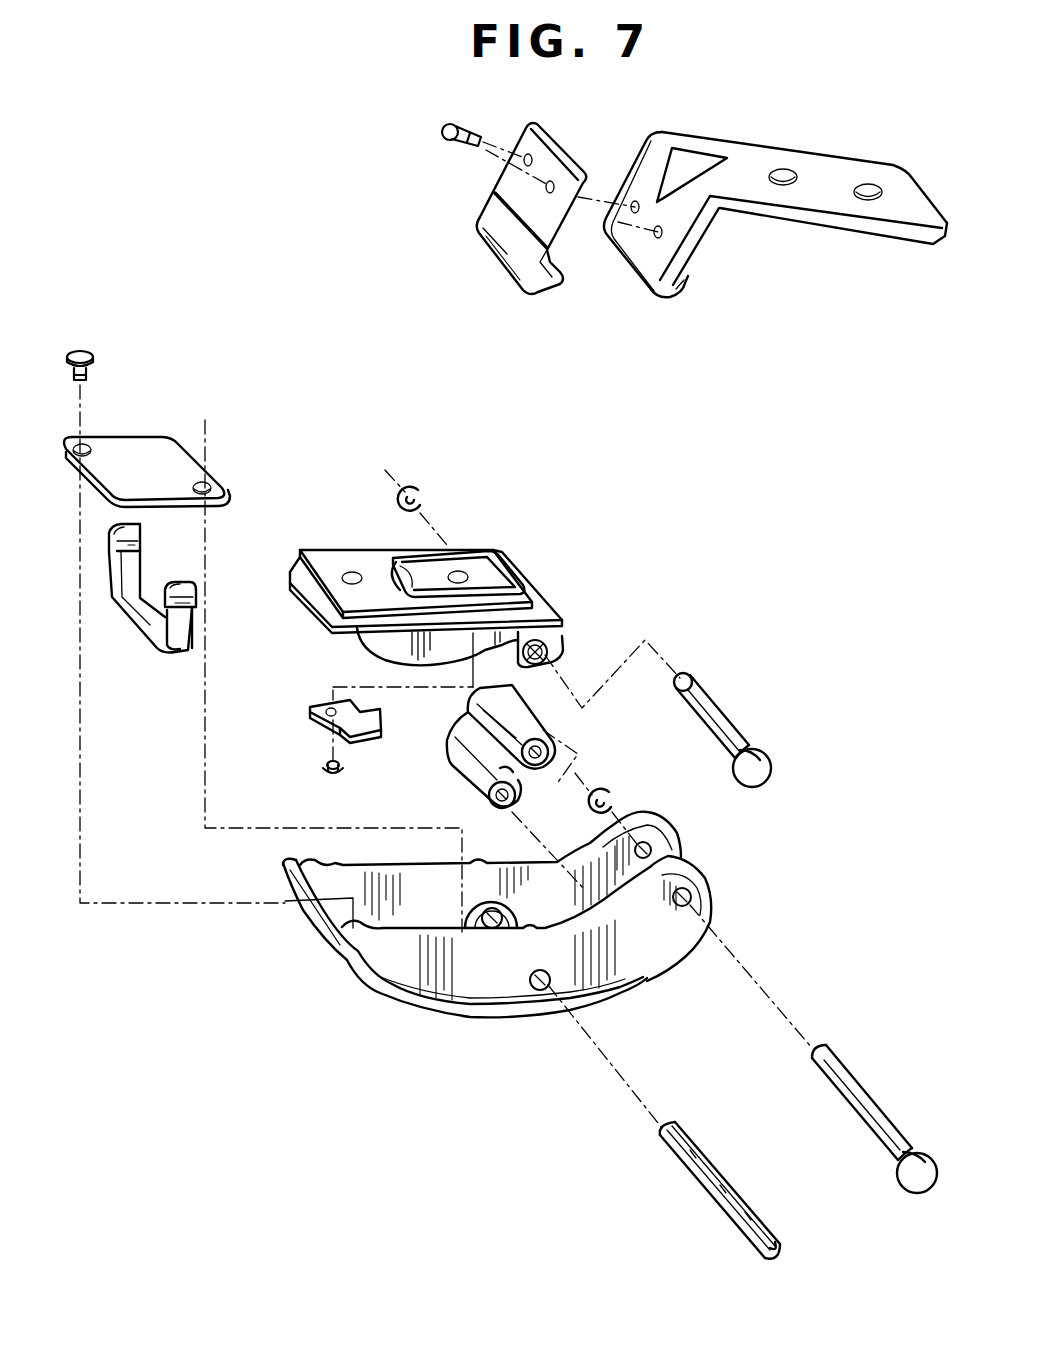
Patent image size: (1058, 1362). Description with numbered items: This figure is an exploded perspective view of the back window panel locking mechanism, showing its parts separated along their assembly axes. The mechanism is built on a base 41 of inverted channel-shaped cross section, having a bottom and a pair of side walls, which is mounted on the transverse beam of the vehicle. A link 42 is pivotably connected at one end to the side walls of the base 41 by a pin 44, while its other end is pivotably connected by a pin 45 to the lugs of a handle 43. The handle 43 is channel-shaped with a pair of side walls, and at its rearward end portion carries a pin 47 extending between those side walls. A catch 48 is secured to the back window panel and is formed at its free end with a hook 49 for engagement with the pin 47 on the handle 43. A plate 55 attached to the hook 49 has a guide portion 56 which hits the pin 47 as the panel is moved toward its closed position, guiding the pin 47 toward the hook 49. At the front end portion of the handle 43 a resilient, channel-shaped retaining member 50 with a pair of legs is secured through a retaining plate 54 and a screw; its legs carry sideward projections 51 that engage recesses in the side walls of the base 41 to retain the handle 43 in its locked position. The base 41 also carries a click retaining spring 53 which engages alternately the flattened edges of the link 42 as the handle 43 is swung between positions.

The base 41 is at (358, 549).
The link 42 is at (488, 720).
The handle 43 is at (665, 955).
The pin 44 is at (720, 713).
The pin 45 is at (735, 1193).
The pin 47 is at (885, 1116).
The catch 48 is at (823, 166).
The hook 49 is at (690, 288).
The retaining member 50 is at (145, 627).
The sideward projections 51 is at (127, 537).
The click retaining spring 53 is at (368, 740).
The retaining plate 54 is at (138, 462).
The plate 55 is at (528, 193).
The guide portion 56 is at (503, 257).